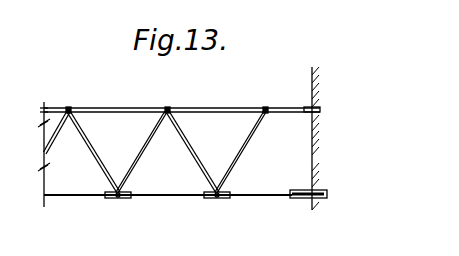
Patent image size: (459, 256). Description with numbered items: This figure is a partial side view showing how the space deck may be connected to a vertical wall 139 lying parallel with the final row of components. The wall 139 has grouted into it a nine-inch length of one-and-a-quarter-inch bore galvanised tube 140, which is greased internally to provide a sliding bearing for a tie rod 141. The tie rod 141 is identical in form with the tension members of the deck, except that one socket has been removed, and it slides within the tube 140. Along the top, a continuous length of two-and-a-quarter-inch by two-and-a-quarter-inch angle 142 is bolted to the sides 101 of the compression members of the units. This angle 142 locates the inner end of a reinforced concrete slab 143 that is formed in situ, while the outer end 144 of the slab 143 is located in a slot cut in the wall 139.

The sides of the compression members 101 is at (262, 108).
The vertical wall 139 is at (300, 160).
The galvanised tube 140 is at (318, 199).
The tie rod 141 is at (251, 196).
The angle 142 is at (268, 109).
The reinforced concrete slab 143 is at (282, 110).
The outer end of the slab 144 is at (320, 110).